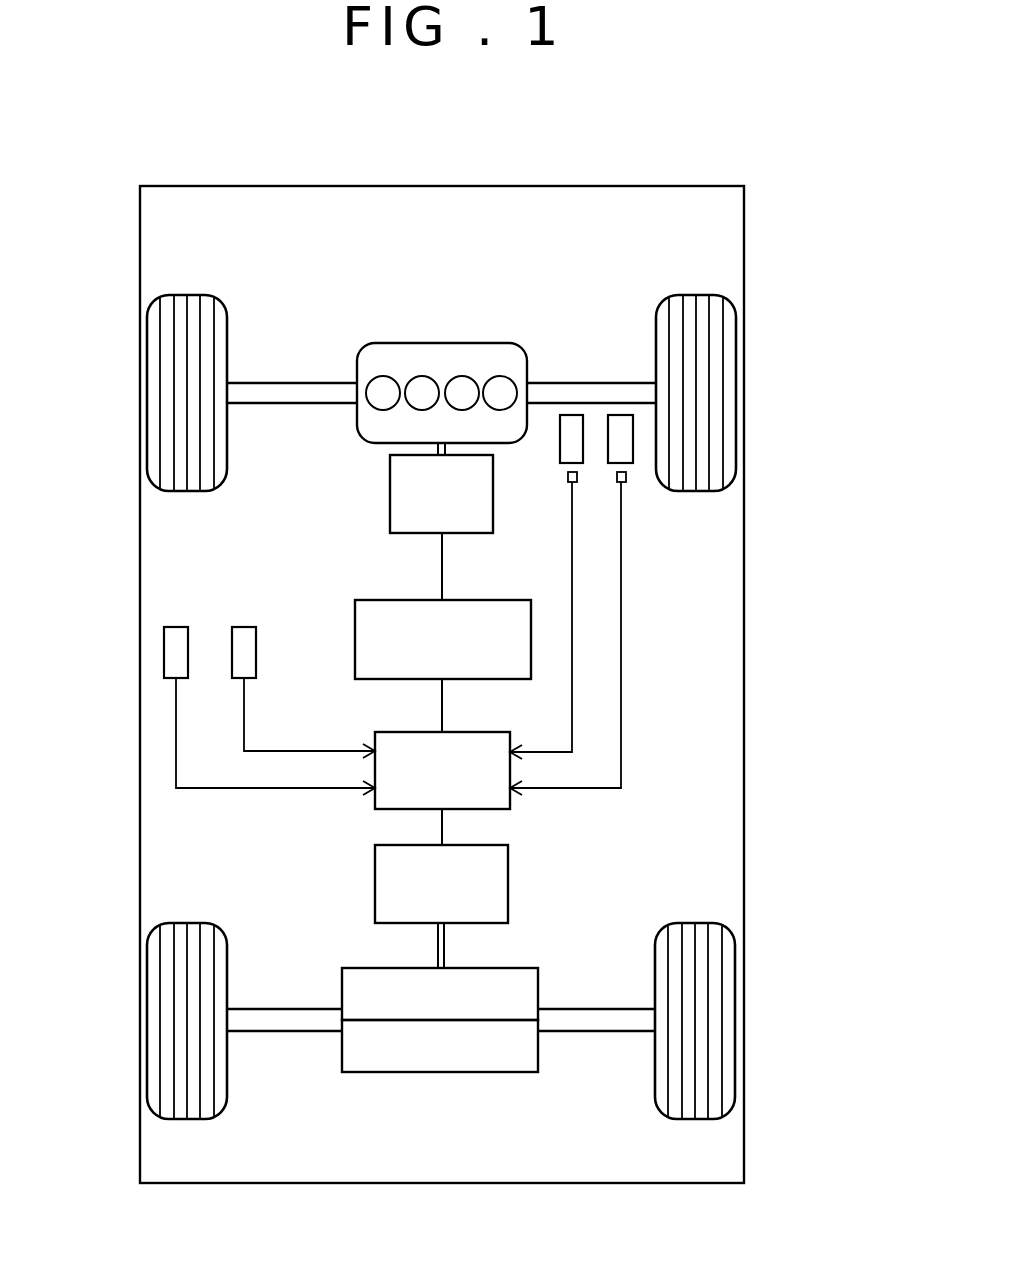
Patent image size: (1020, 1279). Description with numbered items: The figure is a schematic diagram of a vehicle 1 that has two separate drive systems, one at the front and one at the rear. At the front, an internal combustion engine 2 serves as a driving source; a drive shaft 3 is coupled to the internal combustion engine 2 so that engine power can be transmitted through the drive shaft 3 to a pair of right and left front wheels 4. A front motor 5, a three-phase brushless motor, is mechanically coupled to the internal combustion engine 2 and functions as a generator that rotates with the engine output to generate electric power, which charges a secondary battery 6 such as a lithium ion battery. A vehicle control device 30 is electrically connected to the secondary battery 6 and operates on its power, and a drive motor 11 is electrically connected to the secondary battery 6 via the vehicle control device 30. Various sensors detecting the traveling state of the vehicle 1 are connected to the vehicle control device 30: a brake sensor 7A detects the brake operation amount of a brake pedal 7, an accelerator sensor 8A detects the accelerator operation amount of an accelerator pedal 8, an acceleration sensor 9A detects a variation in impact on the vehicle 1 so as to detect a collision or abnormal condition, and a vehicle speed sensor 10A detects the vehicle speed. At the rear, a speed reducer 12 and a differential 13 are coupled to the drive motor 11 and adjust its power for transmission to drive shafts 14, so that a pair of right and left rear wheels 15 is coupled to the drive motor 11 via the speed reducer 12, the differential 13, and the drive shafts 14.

The vehicle 1 is at (116, 161).
The internal combustion engine 2 is at (441, 343).
The drive shaft 3 is at (284, 383).
The front wheels 4 is at (147, 389).
The front motor 5 is at (390, 495).
The secondary battery 6 is at (355, 637).
The brake pedal 7 is at (568, 415).
The brake sensor 7A is at (568, 477).
The accelerator pedal 8 is at (620, 415).
The accelerator sensor 8A is at (626, 477).
The acceleration sensor 9A is at (176, 627).
The vehicle speed sensor 10A is at (244, 627).
The drive motor 11 is at (375, 880).
The speed reducer 12 is at (370, 968).
The differential 13 is at (442, 1072).
The drive shafts 14 is at (282, 1031).
The rear wheels 15 is at (147, 1000).
The vehicle control device 30 is at (400, 732).